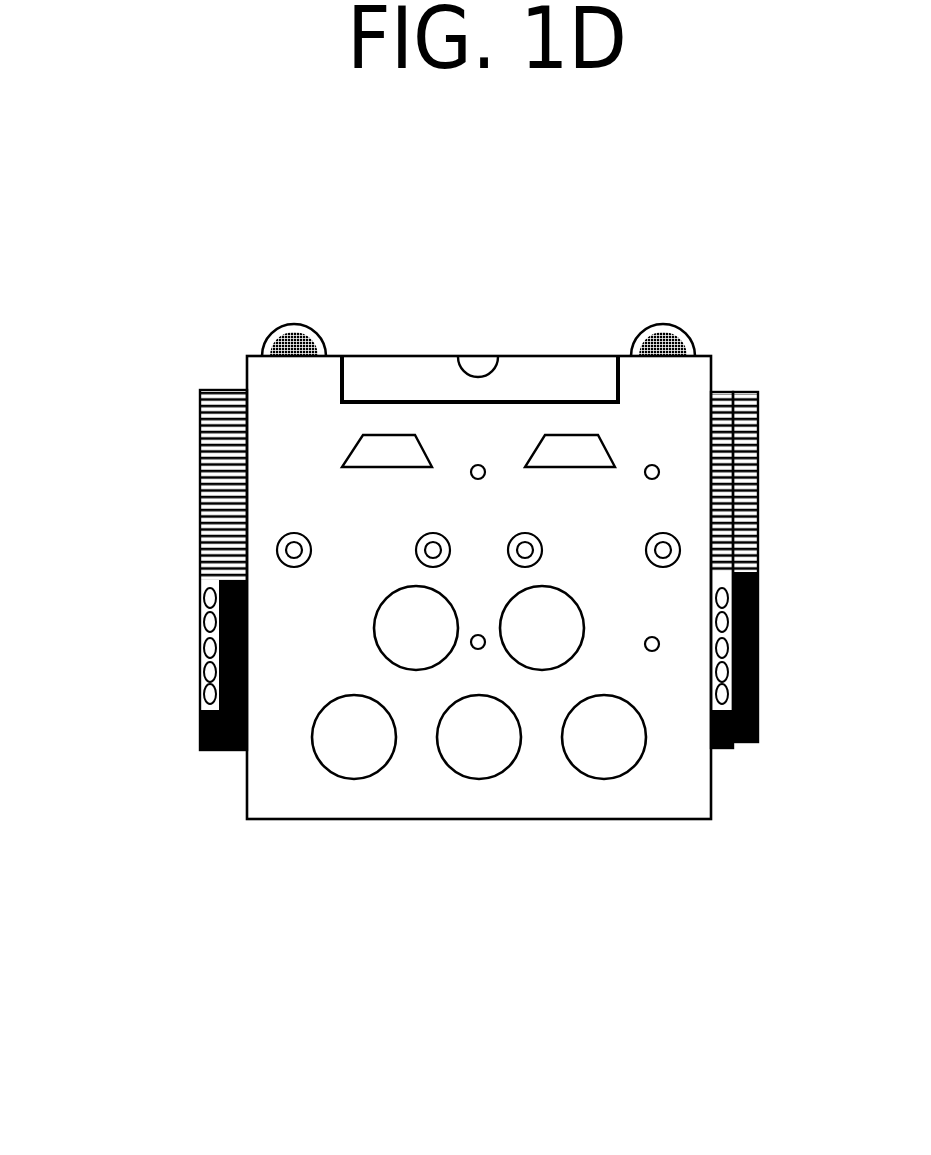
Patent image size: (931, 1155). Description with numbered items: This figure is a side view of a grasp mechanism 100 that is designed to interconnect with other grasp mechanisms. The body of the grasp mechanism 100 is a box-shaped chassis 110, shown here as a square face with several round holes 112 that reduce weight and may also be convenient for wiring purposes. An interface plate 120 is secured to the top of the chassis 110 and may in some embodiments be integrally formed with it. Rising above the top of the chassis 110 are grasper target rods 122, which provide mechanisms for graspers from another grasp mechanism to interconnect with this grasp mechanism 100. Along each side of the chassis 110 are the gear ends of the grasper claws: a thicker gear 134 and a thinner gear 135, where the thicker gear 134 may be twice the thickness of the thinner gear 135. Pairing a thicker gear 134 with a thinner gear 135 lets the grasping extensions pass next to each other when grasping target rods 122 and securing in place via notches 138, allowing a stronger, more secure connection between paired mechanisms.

The grasp mechanism 100 is at (143, 148).
The chassis 110 is at (448, 820).
The holes 112 is at (604, 750).
The interface plate 120 is at (405, 372).
The grasper target rods 122 is at (293, 326).
The thicker gear 134 is at (217, 390).
The thinner gear 135 is at (718, 392).
The notches 138 is at (758, 742).